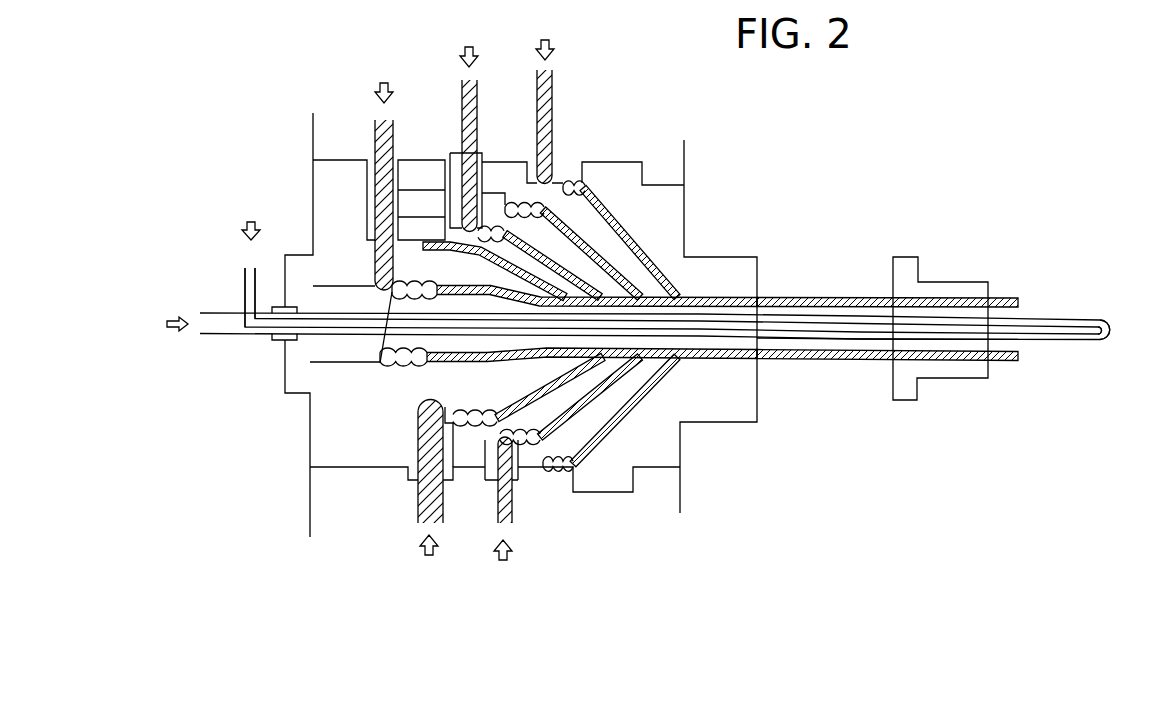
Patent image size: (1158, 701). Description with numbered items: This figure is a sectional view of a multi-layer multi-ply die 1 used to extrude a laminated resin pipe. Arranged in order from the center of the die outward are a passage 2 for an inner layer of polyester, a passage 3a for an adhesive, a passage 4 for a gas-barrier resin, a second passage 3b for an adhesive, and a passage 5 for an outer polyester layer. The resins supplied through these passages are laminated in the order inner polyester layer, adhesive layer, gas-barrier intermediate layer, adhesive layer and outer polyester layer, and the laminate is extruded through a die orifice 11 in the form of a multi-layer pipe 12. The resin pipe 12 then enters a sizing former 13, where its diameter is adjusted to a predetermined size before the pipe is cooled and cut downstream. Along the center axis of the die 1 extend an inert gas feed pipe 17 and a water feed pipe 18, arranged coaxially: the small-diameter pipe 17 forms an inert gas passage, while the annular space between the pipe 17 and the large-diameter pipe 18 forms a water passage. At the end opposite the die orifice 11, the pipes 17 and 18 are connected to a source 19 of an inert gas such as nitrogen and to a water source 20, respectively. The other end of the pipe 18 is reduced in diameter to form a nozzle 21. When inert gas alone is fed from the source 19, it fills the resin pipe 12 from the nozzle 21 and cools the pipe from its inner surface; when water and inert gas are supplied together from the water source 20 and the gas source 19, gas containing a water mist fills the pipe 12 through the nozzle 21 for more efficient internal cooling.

The multi-layer multi-ply die 1 is at (657, 143).
The passage for an inner layer of a polyester 2 is at (443, 288).
The passage for an adhesive 3a is at (448, 240).
The passage for an adhesive 3b is at (560, 217).
The passage for a gas-barrier resin 4 is at (507, 195).
The passage for an outer polyester layer 5 is at (608, 212).
The die orifice 11 is at (762, 297).
The multi-layer pipe 12 is at (835, 297).
The sizing former 13 is at (960, 283).
The inert gas feed pipe 17 is at (813, 328).
The water feed pipe 18 is at (857, 336).
The source of an inert gas 19 is at (253, 274).
The water source 20 is at (623, 326).
The nozzle 21 is at (1108, 330).